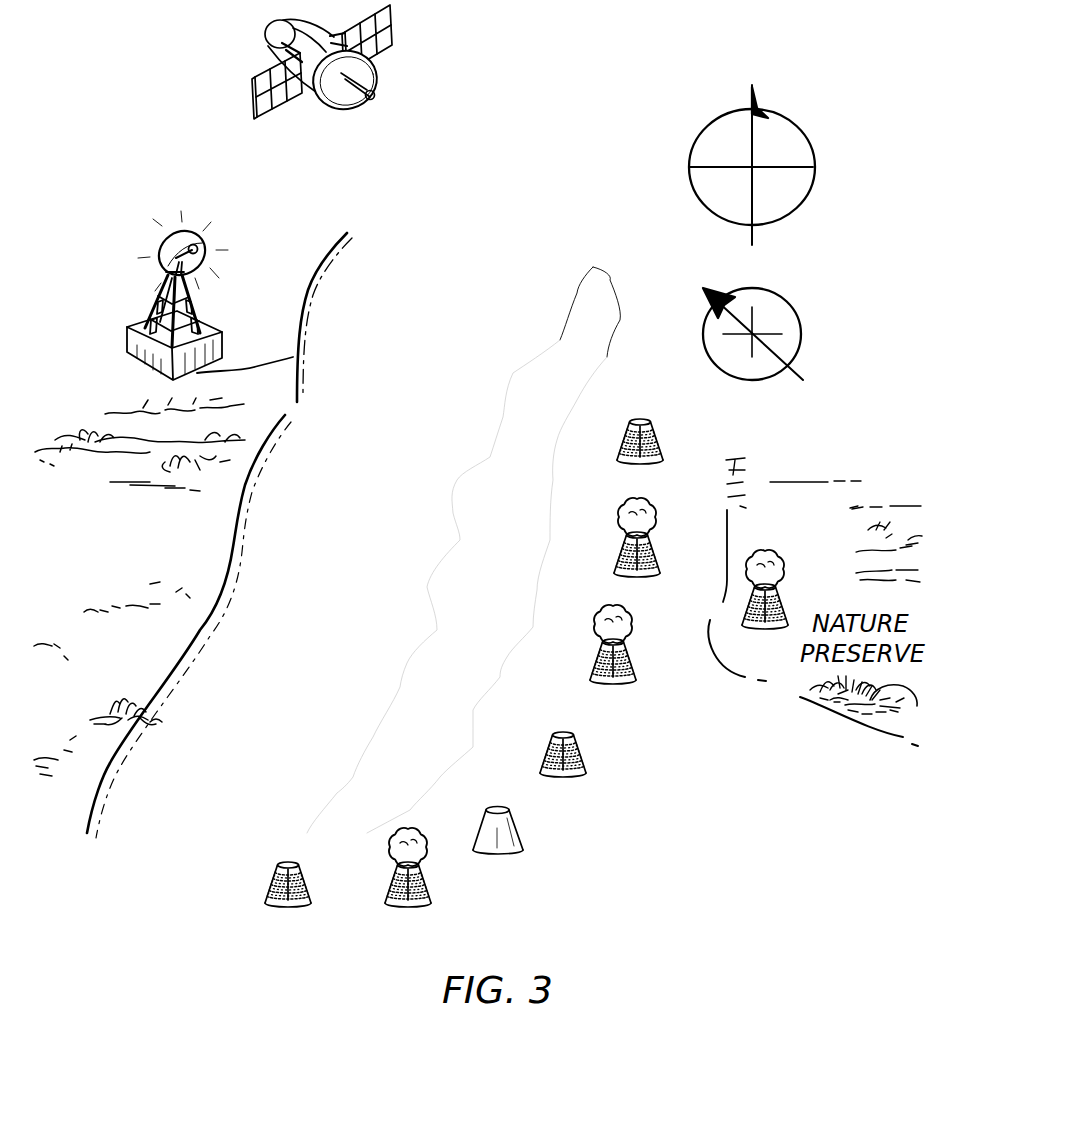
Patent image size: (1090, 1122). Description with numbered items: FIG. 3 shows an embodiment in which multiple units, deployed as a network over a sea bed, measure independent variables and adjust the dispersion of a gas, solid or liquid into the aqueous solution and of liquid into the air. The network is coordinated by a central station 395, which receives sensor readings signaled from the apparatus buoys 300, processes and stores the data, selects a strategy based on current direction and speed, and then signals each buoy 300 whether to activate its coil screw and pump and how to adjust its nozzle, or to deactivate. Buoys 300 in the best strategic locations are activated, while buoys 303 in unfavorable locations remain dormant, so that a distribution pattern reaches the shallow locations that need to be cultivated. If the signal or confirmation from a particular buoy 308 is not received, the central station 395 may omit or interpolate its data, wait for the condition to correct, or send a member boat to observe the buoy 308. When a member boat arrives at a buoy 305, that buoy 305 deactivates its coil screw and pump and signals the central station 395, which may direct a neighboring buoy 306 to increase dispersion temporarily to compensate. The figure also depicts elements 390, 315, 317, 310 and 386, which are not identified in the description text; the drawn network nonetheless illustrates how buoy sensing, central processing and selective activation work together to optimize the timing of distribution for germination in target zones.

The satellite 390 is at (392, 48).
The central station 395 is at (140, 318).
The north compass indicator 315 is at (692, 148).
The heading compass indicator (SE) 317 is at (801, 319).
The road 310 is at (576, 293).
The apparatus buoy 300 is at (660, 448).
The buoy 308 is at (658, 554).
The buoy 305 is at (786, 609).
The neighboring buoy 306 is at (632, 656).
The sensor node (plain) 386 is at (518, 826).
The buoy 303 is at (272, 900).